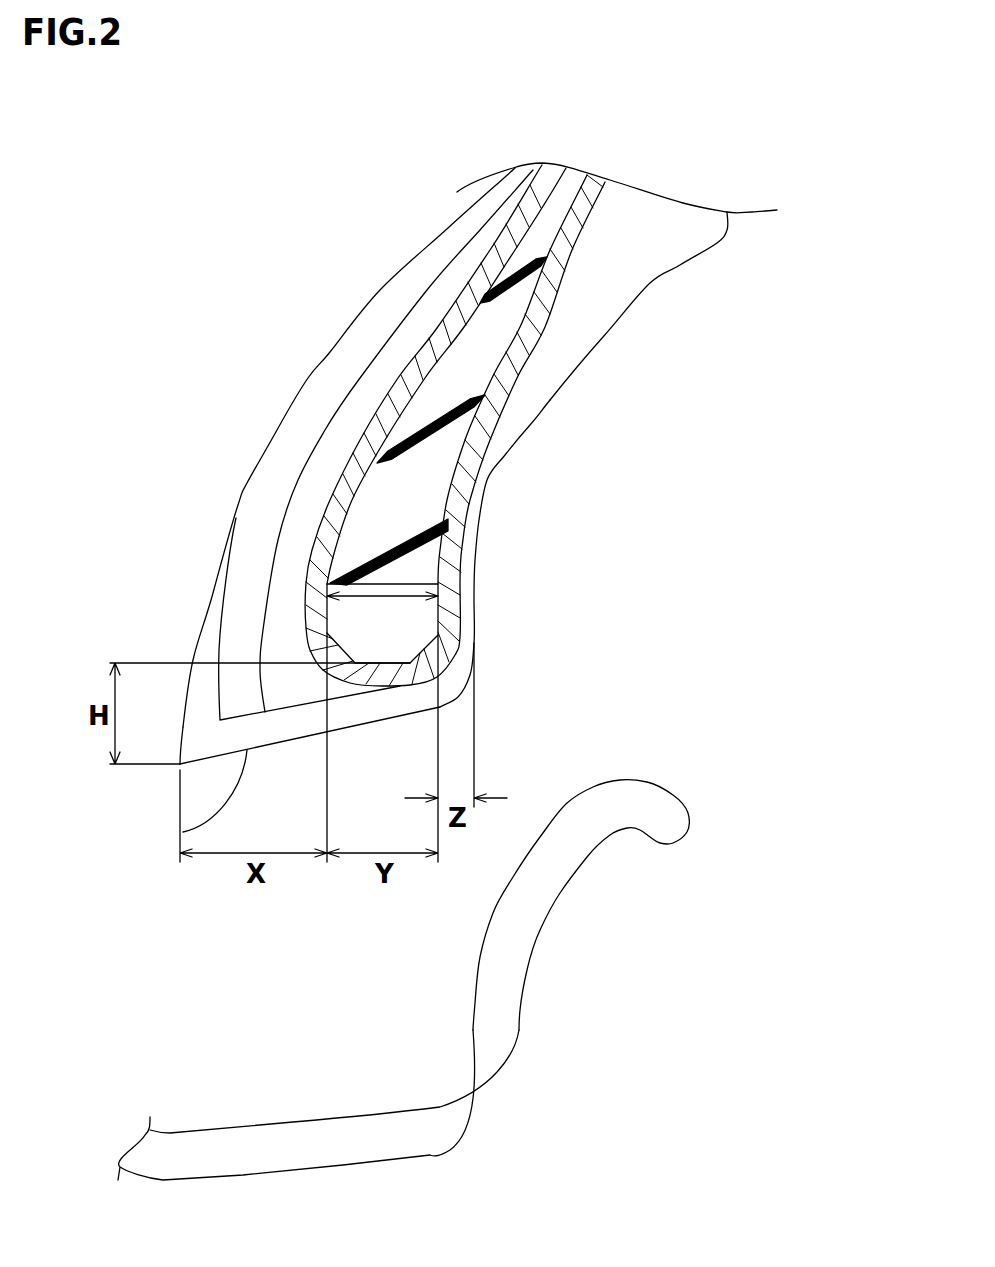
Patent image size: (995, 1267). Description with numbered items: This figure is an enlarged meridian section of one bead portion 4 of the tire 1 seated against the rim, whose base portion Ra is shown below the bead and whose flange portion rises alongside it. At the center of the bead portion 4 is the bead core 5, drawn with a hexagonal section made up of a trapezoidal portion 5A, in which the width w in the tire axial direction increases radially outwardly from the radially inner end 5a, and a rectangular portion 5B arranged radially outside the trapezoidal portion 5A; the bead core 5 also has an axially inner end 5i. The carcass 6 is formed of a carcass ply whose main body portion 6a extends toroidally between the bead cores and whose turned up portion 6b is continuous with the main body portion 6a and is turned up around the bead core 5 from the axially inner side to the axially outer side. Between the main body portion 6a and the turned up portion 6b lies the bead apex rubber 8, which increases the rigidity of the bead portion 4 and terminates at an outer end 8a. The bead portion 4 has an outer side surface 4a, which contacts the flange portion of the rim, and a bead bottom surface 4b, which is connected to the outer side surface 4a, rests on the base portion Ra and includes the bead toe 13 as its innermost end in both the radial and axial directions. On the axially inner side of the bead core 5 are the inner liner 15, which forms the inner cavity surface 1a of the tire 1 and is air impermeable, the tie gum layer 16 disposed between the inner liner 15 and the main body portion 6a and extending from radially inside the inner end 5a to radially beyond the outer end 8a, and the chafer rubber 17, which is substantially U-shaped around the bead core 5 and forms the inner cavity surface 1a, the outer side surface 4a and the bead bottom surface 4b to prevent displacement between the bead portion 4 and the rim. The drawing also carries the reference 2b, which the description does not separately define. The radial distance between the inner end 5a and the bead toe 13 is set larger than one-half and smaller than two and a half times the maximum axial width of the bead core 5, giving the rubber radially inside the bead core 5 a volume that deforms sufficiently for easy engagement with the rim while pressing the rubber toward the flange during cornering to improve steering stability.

The tire 1 is at (715, 318).
The inner cavity surface 1a is at (487, 193).
The sidewall portion 2b is at (247, 484).
The bead portion 4 is at (369, 632).
The outer side surface 4a is at (482, 560).
The bead bottom surface 4b is at (182, 835).
The bead core 5 is at (359, 619).
The trapezoidal portion 5A is at (390, 650).
The rectangular portion 5B is at (395, 620).
The inner end in the tire radial direction of the bead core 5a is at (445, 708).
The inner end in the tire axial direction of the bead core 5i is at (307, 583).
The carcass 6 is at (421, 425).
The main body portion 6a is at (447, 328).
The turned up portion 6b is at (565, 243).
The bead apex rubber 8 is at (495, 327).
The outer end of the bead apex rubber 8a is at (588, 174).
The bead toe 13 is at (180, 765).
The inner liner 15 is at (297, 435).
The tie gum layer 16 is at (385, 372).
The chafer rubber 17 is at (205, 645).
The width of the bead core w is at (388, 595).
The base portion of the rim Ra is at (535, 883).